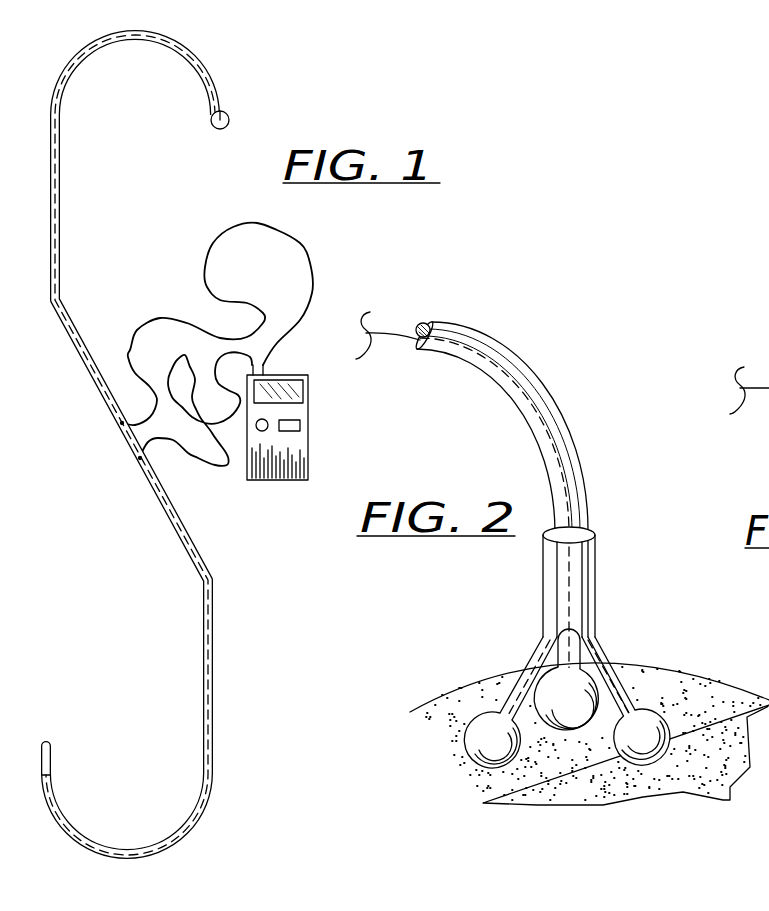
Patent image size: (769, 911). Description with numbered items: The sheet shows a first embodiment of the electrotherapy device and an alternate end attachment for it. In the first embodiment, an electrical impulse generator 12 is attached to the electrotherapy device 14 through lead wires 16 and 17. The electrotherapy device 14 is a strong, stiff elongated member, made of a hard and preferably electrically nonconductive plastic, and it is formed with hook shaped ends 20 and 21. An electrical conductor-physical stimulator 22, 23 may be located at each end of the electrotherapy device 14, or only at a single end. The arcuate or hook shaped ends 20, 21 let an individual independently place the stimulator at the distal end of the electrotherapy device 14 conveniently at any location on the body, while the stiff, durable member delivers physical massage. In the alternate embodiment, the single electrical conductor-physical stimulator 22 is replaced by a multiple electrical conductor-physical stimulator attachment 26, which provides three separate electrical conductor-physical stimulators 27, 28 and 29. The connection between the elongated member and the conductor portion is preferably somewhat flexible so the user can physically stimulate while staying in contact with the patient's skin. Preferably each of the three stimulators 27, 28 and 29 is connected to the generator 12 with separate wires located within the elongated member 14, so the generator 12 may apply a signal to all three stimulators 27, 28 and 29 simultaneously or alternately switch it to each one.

In FIG. 1, the electrical impulse generator 12 is at (308, 410).
In FIG. 1, the electrotherapy device 14 is at (60, 228).
In FIG. 1, the lead wire 16 is at (285, 232).
In FIG. 1, the lead wire 17 is at (205, 473).
In FIG. 1, the hook shaped end 20 is at (190, 47).
In FIG. 1, the hook shaped end 21 is at (173, 845).
In FIG. 1, the electrical conductor-physical stimulator 22 is at (229, 127).
In FIG. 1, the electrical conductor-physical stimulator 23 is at (48, 762).
In FIG. 2, the multiple electrical conductor-physical stimulator attachment 26 is at (595, 620).
In FIG. 2, the electrical conductor-physical stimulator 27 is at (483, 740).
In FIG. 2, the electrical conductor-physical stimulator 28 is at (577, 715).
In FIG. 2, the electrical conductor-physical stimulator 29 is at (677, 795).